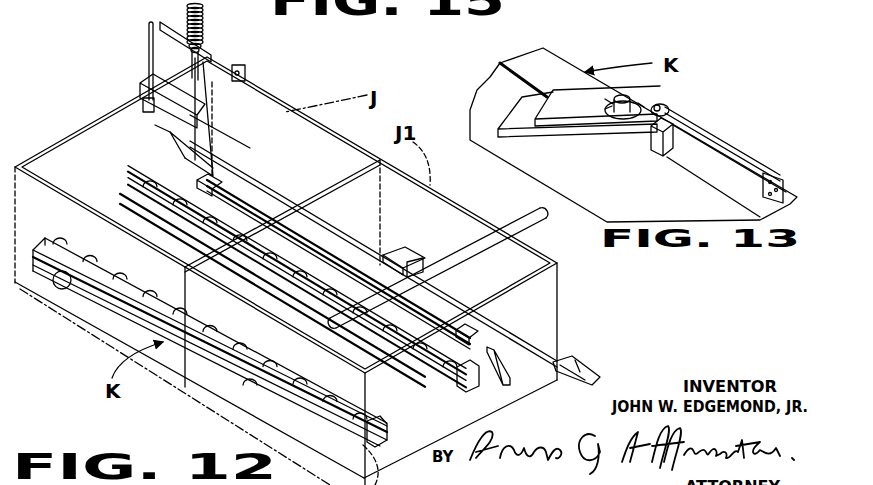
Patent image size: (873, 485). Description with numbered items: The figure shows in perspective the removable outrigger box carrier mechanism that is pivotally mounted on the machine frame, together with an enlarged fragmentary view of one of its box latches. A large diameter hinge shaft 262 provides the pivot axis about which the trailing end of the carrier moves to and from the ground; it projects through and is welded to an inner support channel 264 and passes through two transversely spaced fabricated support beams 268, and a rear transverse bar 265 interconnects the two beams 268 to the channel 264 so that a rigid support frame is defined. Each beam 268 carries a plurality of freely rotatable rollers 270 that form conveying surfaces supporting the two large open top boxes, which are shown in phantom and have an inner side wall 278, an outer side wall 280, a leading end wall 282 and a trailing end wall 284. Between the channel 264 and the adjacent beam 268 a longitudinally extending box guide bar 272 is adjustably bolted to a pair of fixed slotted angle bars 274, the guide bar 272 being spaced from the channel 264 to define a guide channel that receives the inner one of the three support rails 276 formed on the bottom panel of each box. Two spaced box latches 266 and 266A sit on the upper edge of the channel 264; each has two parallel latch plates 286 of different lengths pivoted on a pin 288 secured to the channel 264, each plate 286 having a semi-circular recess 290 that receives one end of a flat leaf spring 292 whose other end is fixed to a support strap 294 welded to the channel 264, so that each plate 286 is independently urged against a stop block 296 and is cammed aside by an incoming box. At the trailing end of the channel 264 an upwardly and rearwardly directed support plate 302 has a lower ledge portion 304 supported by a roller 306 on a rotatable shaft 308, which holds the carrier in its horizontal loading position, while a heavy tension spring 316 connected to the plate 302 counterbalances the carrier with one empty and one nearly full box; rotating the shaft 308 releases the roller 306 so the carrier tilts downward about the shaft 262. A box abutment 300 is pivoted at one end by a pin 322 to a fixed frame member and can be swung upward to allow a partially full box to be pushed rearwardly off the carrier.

In FIG. 12, the hinge shaft 262 is at (478, 238).
In FIG. 12, the inner support channel 264 is at (258, 181).
In FIG. 13, the inner support channel 264 is at (645, 208).
In FIG. 12, the rear transverse bar 265 is at (118, 235).
In FIG. 12, the box latch 266 is at (405, 252).
In FIG. 12, the box latch 266A is at (588, 364).
In FIG. 13, the box latch 266A is at (675, 99).
In FIG. 12, the fabricated support beam 268 is at (270, 280).
In FIG. 12, the rollers 270 is at (150, 190).
In FIG. 12, the box guide bar 272 is at (313, 247).
In FIG. 12, the slotted angle bars 274 is at (215, 173).
In FIG. 12, the support rails 276 is at (503, 392).
In FIG. 12, the inner side wall 278 is at (276, 82).
In FIG. 12, the outer side wall 280 is at (55, 167).
In FIG. 12, the leading end wall 282 is at (373, 155).
In FIG. 12, the trailing end wall 284 is at (78, 128).
In FIG. 13, the latch plates 286 is at (520, 124).
In FIG. 13, the pin 288 is at (626, 94).
In FIG. 13, the semi-circular recess 290 is at (668, 107).
In FIG. 13, the flat leaf spring 292 is at (755, 168).
In FIG. 13, the support strap 294 is at (763, 190).
In FIG. 13, the stop block 296 is at (657, 145).
In FIG. 12, the box abutment 300 is at (200, 50).
In FIG. 12, the support plate 302 is at (205, 118).
In FIG. 12, the lower ledge portion 304 is at (155, 125).
In FIG. 12, the roller 306 is at (138, 87).
In FIG. 12, the rotatable shaft 308 is at (147, 34).
In FIG. 12, the tension spring 316 is at (368, 6).
In FIG. 12, the pin 322 is at (248, 67).